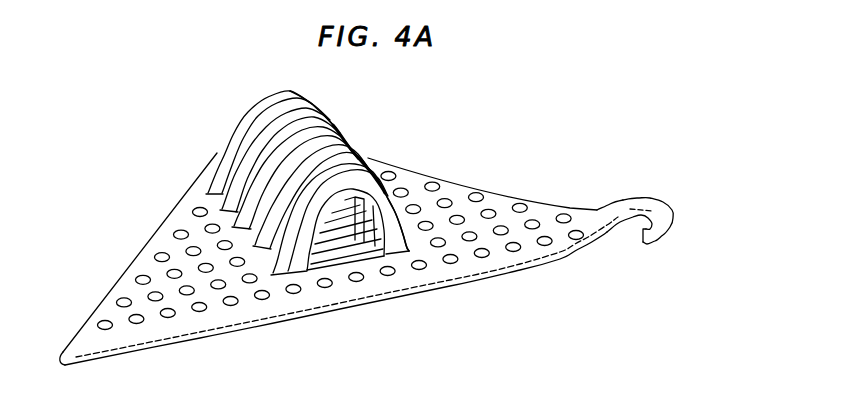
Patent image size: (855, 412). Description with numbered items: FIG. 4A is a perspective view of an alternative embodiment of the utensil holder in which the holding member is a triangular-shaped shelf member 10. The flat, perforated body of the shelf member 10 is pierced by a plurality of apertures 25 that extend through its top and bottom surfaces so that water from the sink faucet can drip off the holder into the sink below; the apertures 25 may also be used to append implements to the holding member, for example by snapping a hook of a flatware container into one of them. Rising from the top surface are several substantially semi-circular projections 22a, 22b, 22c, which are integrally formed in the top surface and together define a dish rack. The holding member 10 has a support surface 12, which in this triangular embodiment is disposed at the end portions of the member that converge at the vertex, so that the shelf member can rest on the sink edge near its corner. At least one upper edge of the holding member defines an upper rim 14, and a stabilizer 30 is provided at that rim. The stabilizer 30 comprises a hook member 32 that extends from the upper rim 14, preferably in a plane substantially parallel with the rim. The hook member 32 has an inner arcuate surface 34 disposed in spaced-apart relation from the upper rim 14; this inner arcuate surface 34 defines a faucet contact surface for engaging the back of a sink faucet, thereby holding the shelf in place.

The holding member 10 is at (328, 228).
The support surface 12 is at (475, 186).
The upper rim 14 is at (607, 221).
The semi-circular projection 22a is at (257, 122).
The semi-circular projection 22b is at (300, 120).
The semi-circular projection 22c is at (270, 171).
The apertures 25 is at (227, 285).
The stabilizer 30 is at (668, 199).
The hook member 32 is at (662, 242).
The inner arcuate surface 34 is at (633, 226).